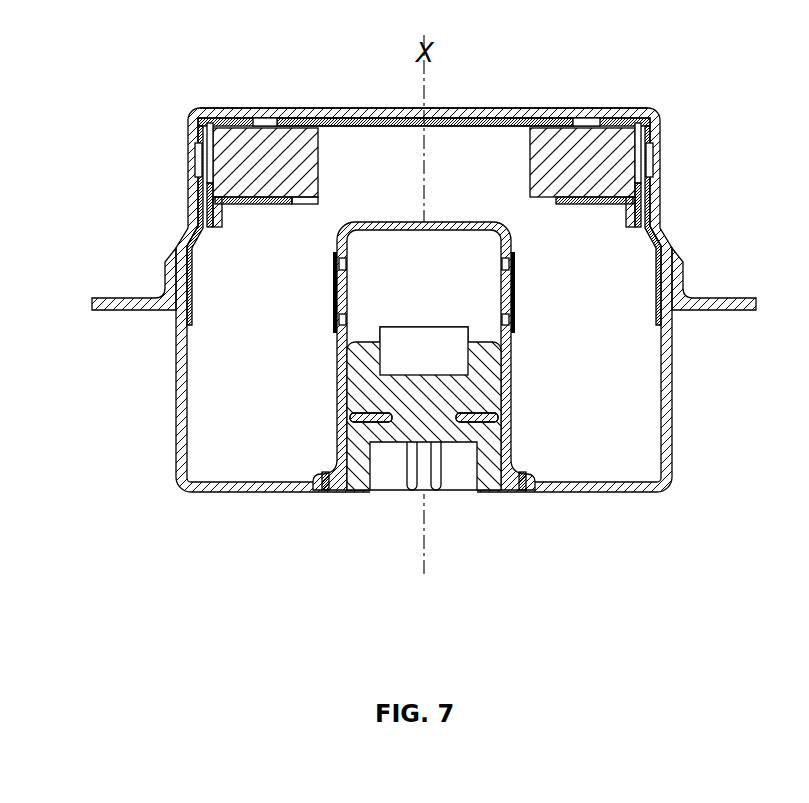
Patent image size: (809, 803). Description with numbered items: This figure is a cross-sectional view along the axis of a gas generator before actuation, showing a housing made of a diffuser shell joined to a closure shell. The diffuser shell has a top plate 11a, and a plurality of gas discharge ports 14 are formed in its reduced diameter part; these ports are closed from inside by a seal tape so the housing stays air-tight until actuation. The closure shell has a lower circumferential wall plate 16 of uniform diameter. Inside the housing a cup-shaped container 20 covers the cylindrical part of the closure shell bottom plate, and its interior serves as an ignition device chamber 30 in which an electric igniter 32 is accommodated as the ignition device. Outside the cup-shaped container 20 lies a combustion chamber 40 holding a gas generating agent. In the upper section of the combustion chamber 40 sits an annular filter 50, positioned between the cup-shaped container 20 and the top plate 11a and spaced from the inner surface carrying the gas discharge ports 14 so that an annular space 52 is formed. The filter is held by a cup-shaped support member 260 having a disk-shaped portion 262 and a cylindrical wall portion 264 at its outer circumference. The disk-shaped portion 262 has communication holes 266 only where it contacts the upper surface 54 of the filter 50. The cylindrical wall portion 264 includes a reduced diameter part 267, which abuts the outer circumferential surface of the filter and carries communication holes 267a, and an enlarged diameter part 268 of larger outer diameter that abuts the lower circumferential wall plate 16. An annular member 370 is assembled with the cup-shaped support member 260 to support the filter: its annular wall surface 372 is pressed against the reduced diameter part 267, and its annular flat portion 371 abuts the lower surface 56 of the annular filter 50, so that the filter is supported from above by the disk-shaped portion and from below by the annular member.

The top plate 11a is at (487, 107).
The gas discharge ports 14 is at (192, 160).
The lower circumferential wall plate 16 is at (176, 426).
The cup-shaped container 20 is at (394, 217).
The ignition device chamber 30 is at (472, 288).
The electric igniter 32 is at (440, 363).
The combustion chamber 40 is at (592, 346).
The annular filter 50 is at (536, 168).
The annular space 52 is at (199, 128).
The upper surface 54 is at (560, 125).
The lower surface 56 is at (308, 200).
The cup-shaped support member 260 is at (374, 130).
The disk-shaped portion 262 is at (446, 128).
The cylindrical wall portion 264 is at (648, 208).
The communication holes 266 is at (264, 119).
The reduced diameter part 267 is at (206, 201).
The communication holes 267a is at (652, 135).
The enlarged diameter part 268 is at (174, 288).
The annular member 370 is at (588, 212).
The annular flat portion 371 is at (260, 205).
The annular wall surface 372 is at (224, 221).